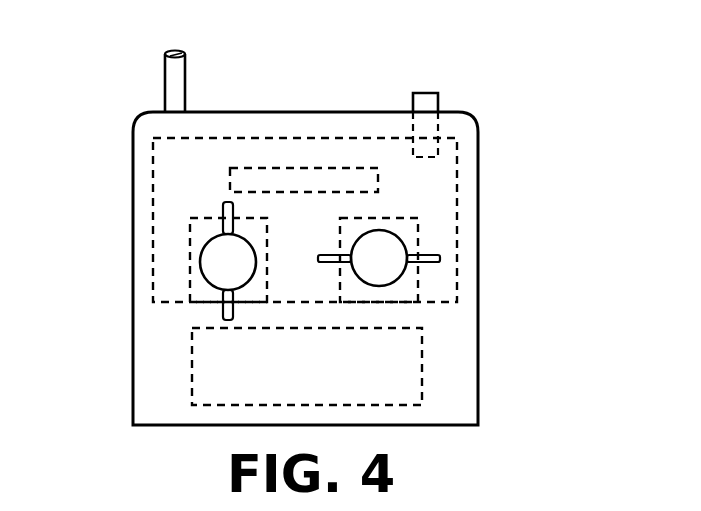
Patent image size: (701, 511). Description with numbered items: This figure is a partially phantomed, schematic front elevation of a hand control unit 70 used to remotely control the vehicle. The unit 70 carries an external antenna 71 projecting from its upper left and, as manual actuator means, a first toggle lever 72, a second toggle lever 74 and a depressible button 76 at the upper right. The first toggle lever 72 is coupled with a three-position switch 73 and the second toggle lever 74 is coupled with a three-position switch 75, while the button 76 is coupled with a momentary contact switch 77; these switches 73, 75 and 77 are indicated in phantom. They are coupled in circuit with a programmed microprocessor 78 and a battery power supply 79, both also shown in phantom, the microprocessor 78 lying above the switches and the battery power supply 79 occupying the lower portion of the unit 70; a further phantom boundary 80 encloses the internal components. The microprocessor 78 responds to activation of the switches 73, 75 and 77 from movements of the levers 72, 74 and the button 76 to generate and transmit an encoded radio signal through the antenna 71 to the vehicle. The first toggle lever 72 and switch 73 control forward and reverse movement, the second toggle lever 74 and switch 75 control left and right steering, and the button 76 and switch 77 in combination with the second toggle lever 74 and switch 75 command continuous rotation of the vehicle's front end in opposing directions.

The hand control unit 70 is at (478, 207).
The external antenna 71 is at (187, 75).
The first toggle lever 72 is at (217, 262).
The three-position switch 73 is at (193, 233).
The second toggle lever 74 is at (383, 248).
The three-position switch 75 is at (400, 289).
The depressible button 76 is at (427, 103).
The momentary contact switch 77 is at (440, 149).
The programmed microprocessor 78 is at (313, 168).
The battery power supply 79 is at (320, 378).
The inner enclosure boundary 80 is at (222, 138).